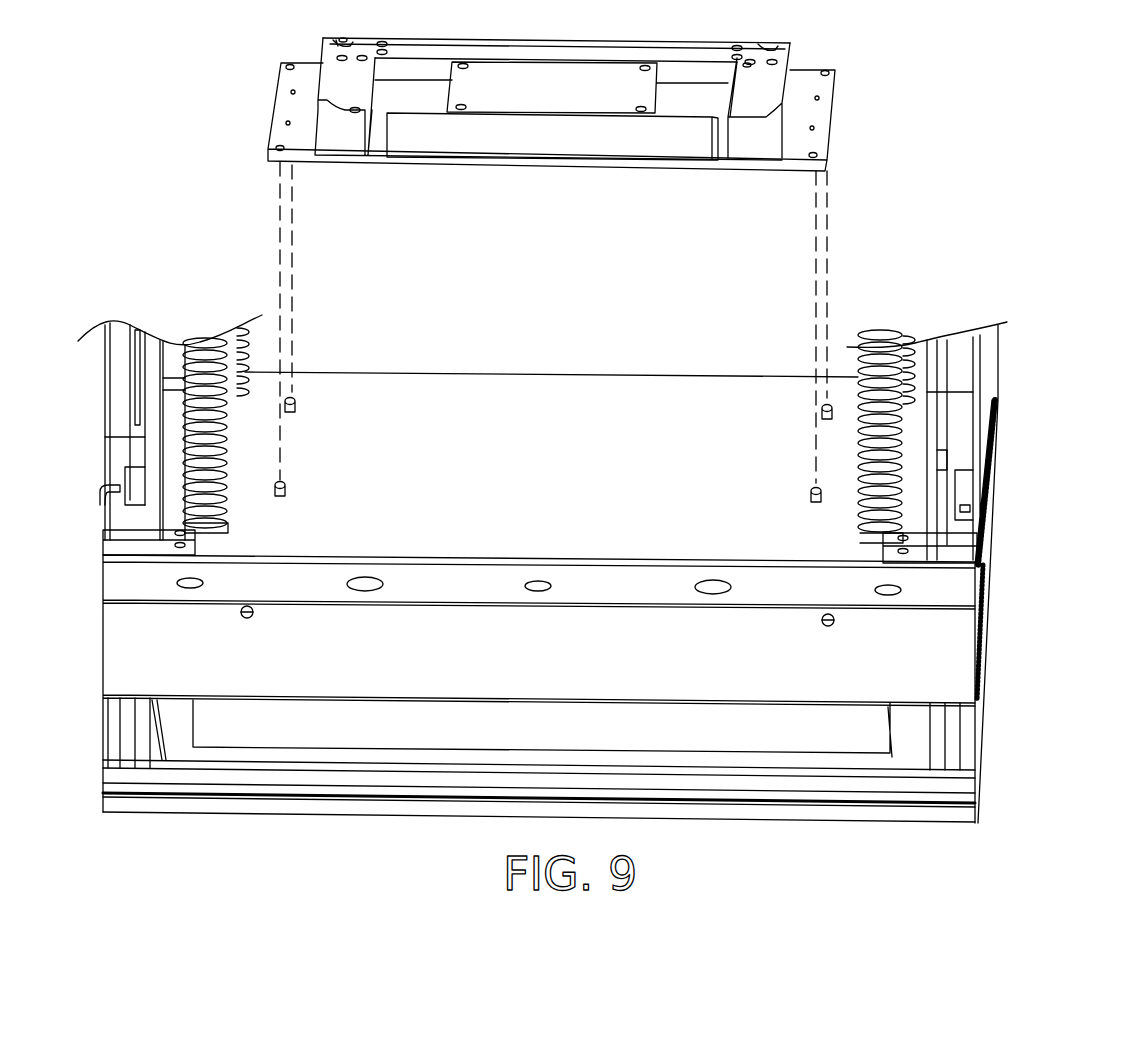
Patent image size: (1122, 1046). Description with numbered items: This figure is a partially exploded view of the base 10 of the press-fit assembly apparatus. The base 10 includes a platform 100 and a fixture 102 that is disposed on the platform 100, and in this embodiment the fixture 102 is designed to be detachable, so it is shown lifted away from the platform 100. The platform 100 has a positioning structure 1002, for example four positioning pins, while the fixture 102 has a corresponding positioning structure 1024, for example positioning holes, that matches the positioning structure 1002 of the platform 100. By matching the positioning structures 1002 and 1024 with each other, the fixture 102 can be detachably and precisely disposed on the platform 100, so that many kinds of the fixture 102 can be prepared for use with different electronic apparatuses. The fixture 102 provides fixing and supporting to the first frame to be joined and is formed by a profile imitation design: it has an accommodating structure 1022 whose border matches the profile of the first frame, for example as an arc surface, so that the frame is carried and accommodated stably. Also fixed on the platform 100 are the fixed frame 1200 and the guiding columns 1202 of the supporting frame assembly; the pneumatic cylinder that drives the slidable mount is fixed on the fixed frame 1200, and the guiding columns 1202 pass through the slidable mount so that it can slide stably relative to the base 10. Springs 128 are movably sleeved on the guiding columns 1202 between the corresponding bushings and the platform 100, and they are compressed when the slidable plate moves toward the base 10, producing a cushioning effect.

The base 10 is at (975, 72).
The platform 100 is at (837, 385).
The fixture 102 is at (818, 113).
The positioning structure 1002 is at (298, 407).
The accommodating structure 1022 is at (325, 60).
The positioning structure 1024 is at (266, 142).
The fixed frame 1200 is at (960, 422).
The springs 128 is at (903, 472).
The guiding columns 1202 is at (890, 507).